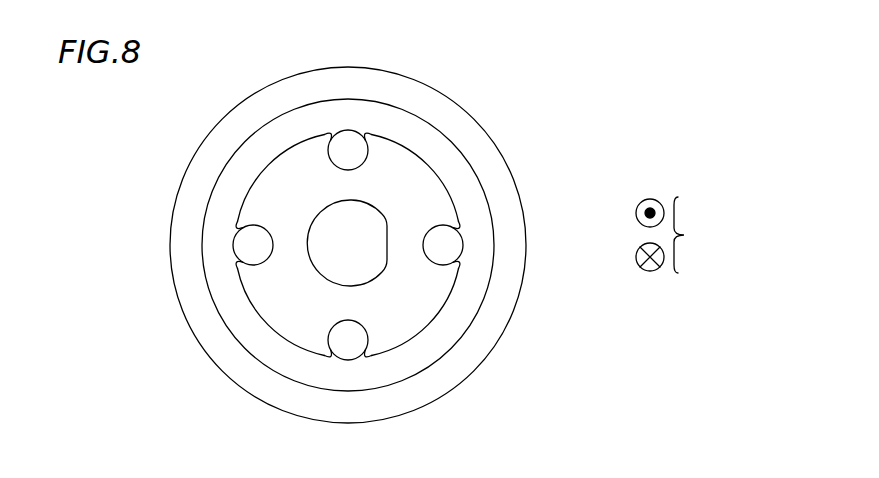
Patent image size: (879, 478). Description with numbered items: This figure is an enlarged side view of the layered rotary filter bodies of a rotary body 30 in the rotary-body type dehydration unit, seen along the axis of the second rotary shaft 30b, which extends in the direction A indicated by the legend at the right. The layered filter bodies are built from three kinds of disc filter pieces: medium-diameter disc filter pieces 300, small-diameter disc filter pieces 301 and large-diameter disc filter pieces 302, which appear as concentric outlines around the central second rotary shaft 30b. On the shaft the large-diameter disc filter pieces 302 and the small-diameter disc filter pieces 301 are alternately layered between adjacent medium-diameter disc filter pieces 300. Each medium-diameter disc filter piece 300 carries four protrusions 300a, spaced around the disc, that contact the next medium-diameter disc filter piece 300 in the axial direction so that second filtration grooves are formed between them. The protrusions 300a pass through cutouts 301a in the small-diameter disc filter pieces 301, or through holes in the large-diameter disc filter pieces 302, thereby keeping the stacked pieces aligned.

The rotary body 30 is at (431, 170).
The second rotary shaft 30b is at (367, 218).
The medium-diameter disc filter piece 300 is at (391, 122).
The protrusion 300a is at (345, 140).
The small-diameter disc filter piece 301 is at (432, 200).
The cutout 301a is at (333, 145).
The large-diameter disc filter piece 302 is at (507, 190).
The direction A is at (672, 235).